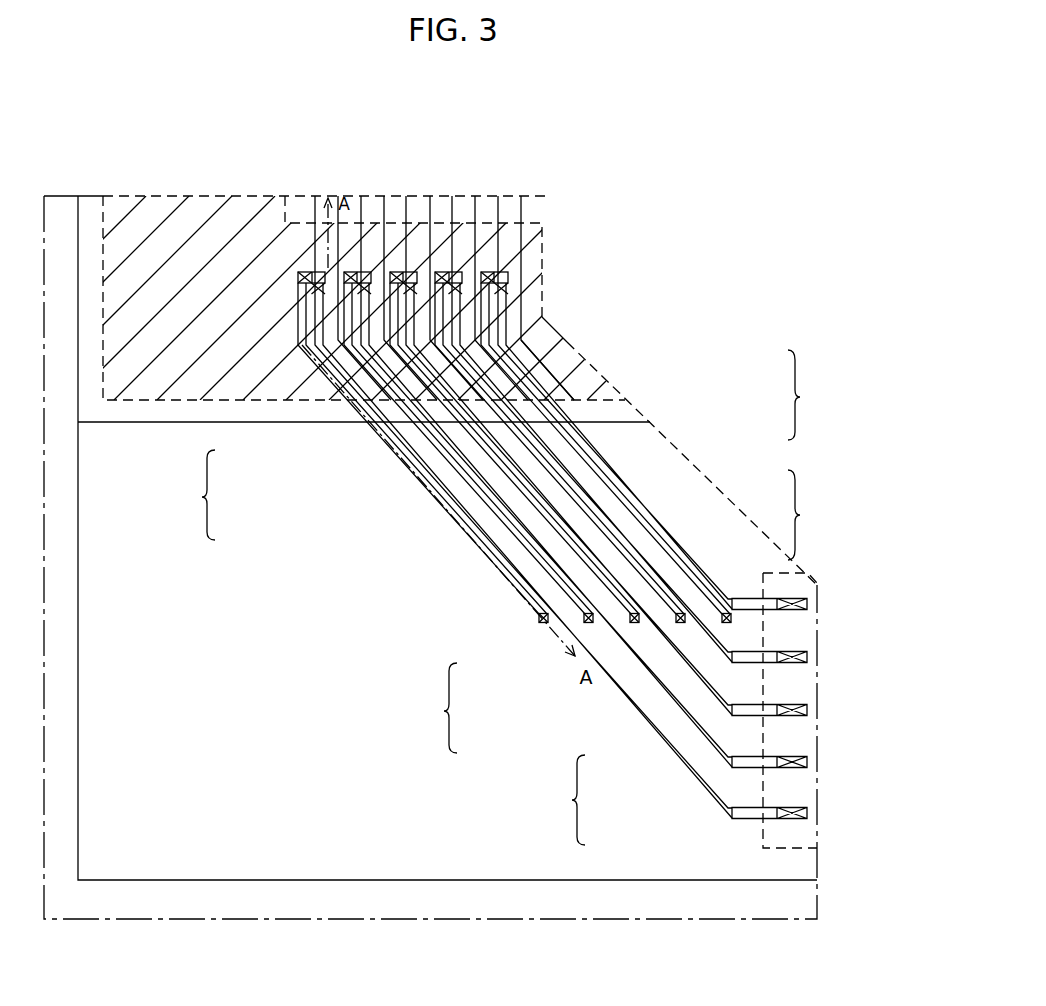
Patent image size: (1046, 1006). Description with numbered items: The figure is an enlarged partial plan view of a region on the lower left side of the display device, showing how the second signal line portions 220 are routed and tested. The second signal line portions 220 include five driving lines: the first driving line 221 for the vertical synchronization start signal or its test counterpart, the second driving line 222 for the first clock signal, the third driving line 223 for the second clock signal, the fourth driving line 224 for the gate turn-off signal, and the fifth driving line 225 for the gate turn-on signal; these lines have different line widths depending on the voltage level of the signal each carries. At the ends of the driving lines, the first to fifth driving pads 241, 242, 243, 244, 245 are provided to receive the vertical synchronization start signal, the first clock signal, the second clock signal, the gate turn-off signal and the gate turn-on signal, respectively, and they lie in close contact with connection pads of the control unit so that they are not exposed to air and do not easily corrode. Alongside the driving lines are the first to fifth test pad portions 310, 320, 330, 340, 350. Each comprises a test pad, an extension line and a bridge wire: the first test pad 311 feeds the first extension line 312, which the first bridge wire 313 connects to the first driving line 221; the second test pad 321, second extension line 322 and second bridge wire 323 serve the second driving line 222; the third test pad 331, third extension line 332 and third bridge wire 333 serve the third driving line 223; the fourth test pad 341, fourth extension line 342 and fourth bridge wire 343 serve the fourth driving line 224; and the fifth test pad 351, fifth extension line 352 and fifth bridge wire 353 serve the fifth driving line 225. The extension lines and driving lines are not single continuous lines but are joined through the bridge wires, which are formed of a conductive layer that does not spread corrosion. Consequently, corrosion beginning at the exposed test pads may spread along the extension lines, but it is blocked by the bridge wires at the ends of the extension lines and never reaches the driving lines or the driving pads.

The second signal line portions 220 is at (312, 126).
The first driving line 221 is at (507, 202).
The second driving line 222 is at (460, 202).
The third driving line 223 is at (414, 202).
The fourth driving line 224 is at (371, 202).
The fifth driving line 225 is at (324, 202).
The first driving pad 241 is at (807, 604).
The second driving pad 242 is at (807, 657).
The third driving pad 243 is at (807, 710).
The fourth driving pad 244 is at (807, 762).
The fifth driving pad 245 is at (807, 813).
The first test pad portion 310 is at (815, 515).
The first test pad 311 is at (715, 612).
The first extension line 312 is at (668, 540).
The first bridge wire 313 is at (672, 530).
The second test pad portion 320 is at (815, 395).
The second test pad 321 is at (680, 612).
The second extension line 322 is at (540, 435).
The second bridge wire 323 is at (480, 255).
The third test pad portion 330 is at (554, 800).
The third test pad 331 is at (726, 624).
The third extension line 332 is at (682, 624).
The third bridge wire 333 is at (640, 624).
The fourth test pad portion 340 is at (426, 708).
The fourth test pad 341 is at (636, 624).
The fourth extension line 342 is at (590, 624).
The fourth bridge wire 343 is at (548, 624).
The fifth test pad portion 350 is at (184, 495).
The fifth test pad 351 is at (538, 618).
The fifth extension line 352 is at (430, 492).
The fifth bridge wire 353 is at (303, 283).